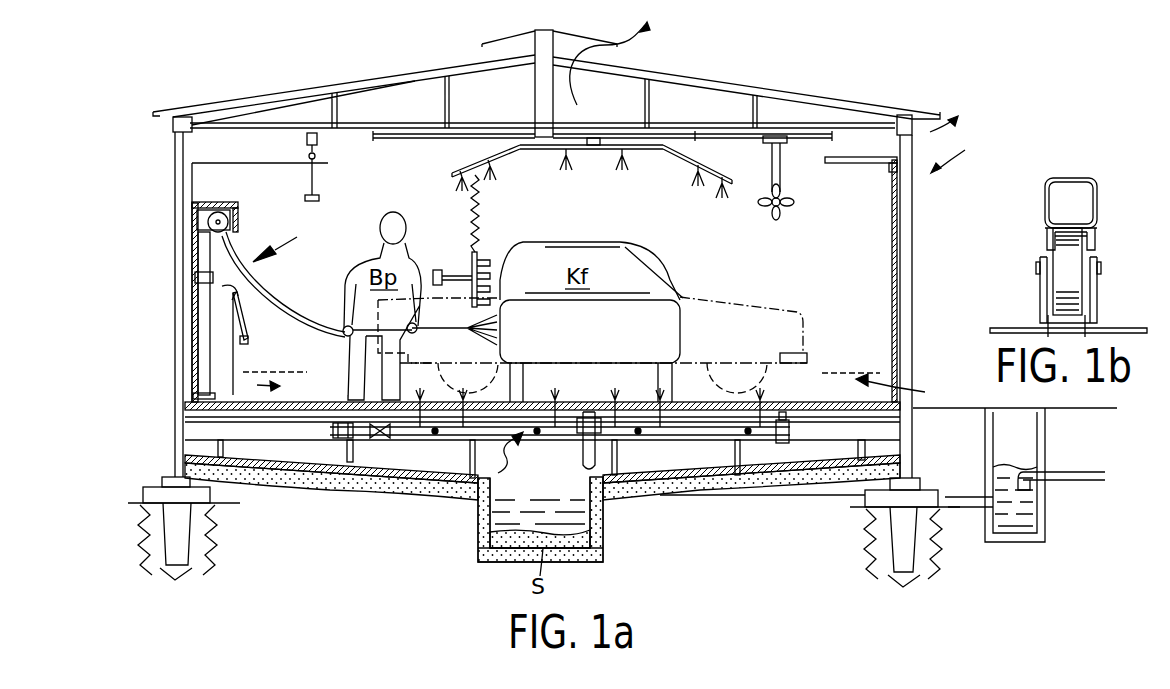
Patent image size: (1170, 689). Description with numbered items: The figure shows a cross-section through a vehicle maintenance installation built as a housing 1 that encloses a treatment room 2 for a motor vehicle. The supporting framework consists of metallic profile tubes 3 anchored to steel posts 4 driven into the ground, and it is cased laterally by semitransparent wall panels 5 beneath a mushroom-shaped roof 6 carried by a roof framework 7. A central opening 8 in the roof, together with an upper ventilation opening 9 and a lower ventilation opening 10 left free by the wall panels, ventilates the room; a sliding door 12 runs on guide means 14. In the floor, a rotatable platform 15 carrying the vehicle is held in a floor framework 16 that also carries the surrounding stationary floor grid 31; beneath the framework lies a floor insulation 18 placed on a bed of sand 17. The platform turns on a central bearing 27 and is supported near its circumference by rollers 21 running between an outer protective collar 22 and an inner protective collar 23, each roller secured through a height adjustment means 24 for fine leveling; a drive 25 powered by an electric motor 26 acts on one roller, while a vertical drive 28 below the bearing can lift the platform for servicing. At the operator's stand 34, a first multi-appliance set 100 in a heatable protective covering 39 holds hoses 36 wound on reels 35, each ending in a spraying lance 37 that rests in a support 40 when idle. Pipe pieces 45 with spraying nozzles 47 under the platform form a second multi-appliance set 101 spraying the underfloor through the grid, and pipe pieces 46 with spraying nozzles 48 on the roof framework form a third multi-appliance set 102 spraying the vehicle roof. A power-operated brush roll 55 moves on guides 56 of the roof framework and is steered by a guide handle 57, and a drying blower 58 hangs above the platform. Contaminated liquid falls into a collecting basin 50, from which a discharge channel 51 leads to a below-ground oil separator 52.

In FIG. 1A, the housing 1 is at (953, 144).
In FIG. 1A, the treatment room 2 is at (726, 268).
In FIG. 1A, the metallic profile tubes 3 is at (175, 200).
In FIG. 1A, the steel posts 4 is at (150, 495).
In FIG. 1A, the wall panels 5 is at (226, 163).
In FIG. 1A, the mushroom-shaped roof 6 is at (262, 96).
In FIG. 1B, the mushroom-shaped roof 6 is at (1082, 205).
In FIG. 1A, the roof framework 7 is at (400, 92).
In FIG. 1A, the central opening 8 is at (514, 58).
In FIG. 1A, the upper ventilation opening 9 is at (843, 147).
In FIG. 1A, the lower ventilation opening 10 is at (900, 380).
In FIG. 1A, the door 12 is at (892, 220).
In FIG. 1A, the guide means 14 is at (855, 175).
In FIG. 1A, the rotatable platform 15 is at (647, 420).
In FIG. 1A, the floor framework 16 is at (183, 455).
In FIG. 1A, the bed of sand 17 is at (410, 487).
In FIG. 1A, the floor insulation 18 is at (280, 474).
In FIG. 1A, the rollers 21 is at (780, 445).
In FIG. 1B, the rollers 21 is at (1060, 282).
In FIG. 1B, the outer protective collar 22 is at (1095, 240).
In FIG. 1B, the inner protective collar 23 is at (1047, 240).
In FIG. 1B, the height adjustment means 24 is at (1097, 325).
In FIG. 1A, the drive 25 is at (365, 445).
In FIG. 1A, the electric motor 26 is at (338, 440).
In FIG. 1A, the central bearing 27 is at (587, 402).
In FIG. 1A, the vertical drive 28 is at (595, 472).
In FIG. 1A, the stationary floor grid 31 is at (255, 412).
In FIG. 1A, the operator's stand 34 is at (240, 378).
In FIG. 1A, the reel 35 is at (238, 218).
In FIG. 1A, the hose 36 is at (232, 291).
In FIG. 1A, the spraying lance 37 is at (468, 378).
In FIG. 1A, the protective covering 39 is at (205, 214).
In FIG. 1A, the support 40 is at (197, 277).
In FIG. 1A, the pipe pieces 45 is at (697, 432).
In FIG. 1A, the pipe pieces 46 is at (660, 145).
In FIG. 1A, the spraying nozzles 47 is at (777, 402).
In FIG. 1A, the spraying nozzles 48 is at (700, 168).
In FIG. 1A, the collecting basin 50 is at (517, 522).
In FIG. 1A, the discharge channel 51 is at (825, 497).
In FIG. 1A, the oil separator 52 is at (1027, 520).
In FIG. 1A, the brush roll 55 is at (490, 265).
In FIG. 1A, the guides 56 is at (437, 265).
In FIG. 1A, the guide handle 57 is at (762, 193).
In FIG. 1A, the drying blower 58 is at (320, 197).
In FIG. 1A, the first multi-appliance set 100 is at (291, 235).
In FIG. 1A, the second multi-appliance set 101 is at (478, 494).
In FIG. 1A, the third multi-appliance set 102 is at (497, 151).